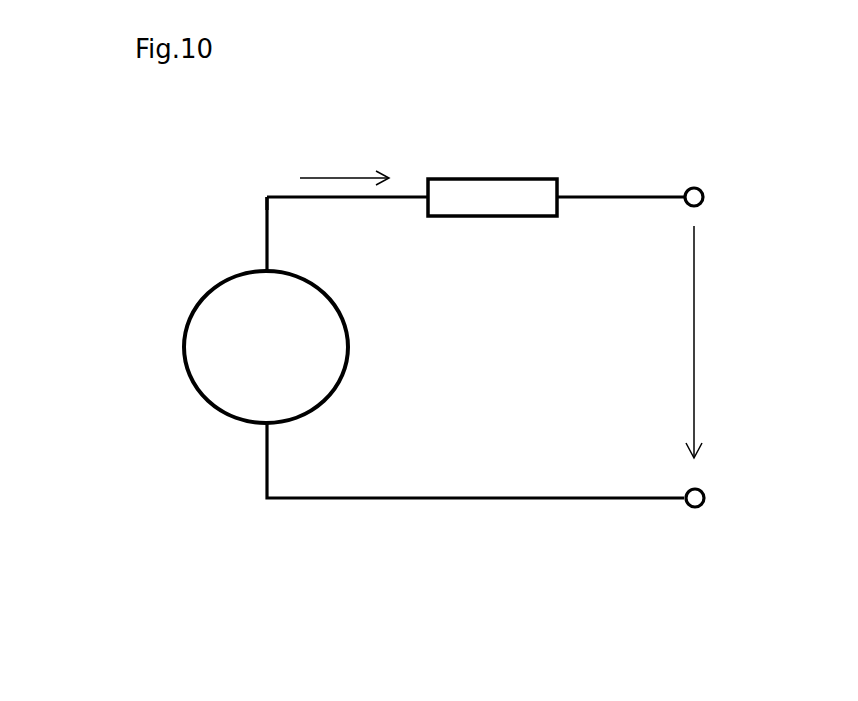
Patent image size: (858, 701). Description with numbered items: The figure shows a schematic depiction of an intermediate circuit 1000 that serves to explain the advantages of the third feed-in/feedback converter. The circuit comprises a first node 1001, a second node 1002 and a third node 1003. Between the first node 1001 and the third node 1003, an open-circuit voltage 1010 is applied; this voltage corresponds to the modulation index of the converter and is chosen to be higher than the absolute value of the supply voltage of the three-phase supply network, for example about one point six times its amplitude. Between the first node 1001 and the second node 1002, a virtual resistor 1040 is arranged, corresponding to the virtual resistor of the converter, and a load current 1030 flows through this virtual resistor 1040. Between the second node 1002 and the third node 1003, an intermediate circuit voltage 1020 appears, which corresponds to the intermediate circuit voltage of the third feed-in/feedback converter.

The intermediate circuit 1000 is at (170, 546).
The first node 1001 is at (263, 195).
The second node 1002 is at (704, 194).
The third node 1003 is at (705, 503).
The open-circuit voltage 1010 is at (240, 399).
The intermediate circuit voltage 1020 is at (696, 364).
The load current 1030 is at (340, 178).
The virtual resistor 1040 is at (498, 178).